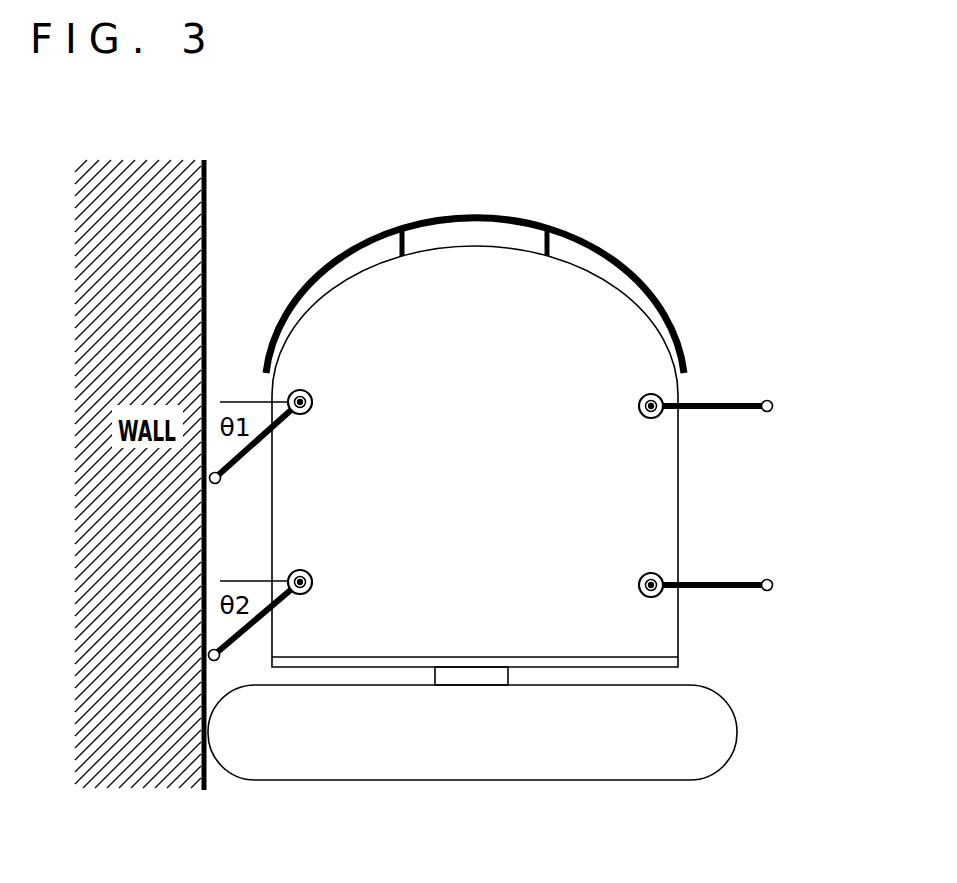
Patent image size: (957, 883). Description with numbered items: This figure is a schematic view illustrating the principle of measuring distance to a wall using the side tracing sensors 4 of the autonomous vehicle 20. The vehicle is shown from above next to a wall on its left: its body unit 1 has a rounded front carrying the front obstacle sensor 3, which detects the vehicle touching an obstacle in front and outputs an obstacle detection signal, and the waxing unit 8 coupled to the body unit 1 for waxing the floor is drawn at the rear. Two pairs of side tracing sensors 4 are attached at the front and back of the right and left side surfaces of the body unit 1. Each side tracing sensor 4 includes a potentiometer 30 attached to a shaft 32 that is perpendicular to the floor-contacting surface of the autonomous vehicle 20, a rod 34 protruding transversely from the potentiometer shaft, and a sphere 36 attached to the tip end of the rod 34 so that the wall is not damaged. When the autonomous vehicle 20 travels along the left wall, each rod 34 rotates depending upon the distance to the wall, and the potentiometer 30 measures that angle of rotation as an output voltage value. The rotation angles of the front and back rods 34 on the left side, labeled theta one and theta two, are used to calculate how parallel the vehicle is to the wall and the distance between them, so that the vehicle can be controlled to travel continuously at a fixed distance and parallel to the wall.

The body unit 1 is at (683, 510).
The front obstacle sensor 3 is at (592, 243).
The side tracing sensor 4 is at (283, 456).
The waxing unit 8 is at (732, 712).
The autonomous vehicle 20 is at (680, 246).
The potentiometer 30 is at (306, 391).
The shaft 32 is at (310, 412).
The rod 34 is at (250, 452).
The sphere 36 is at (220, 483).